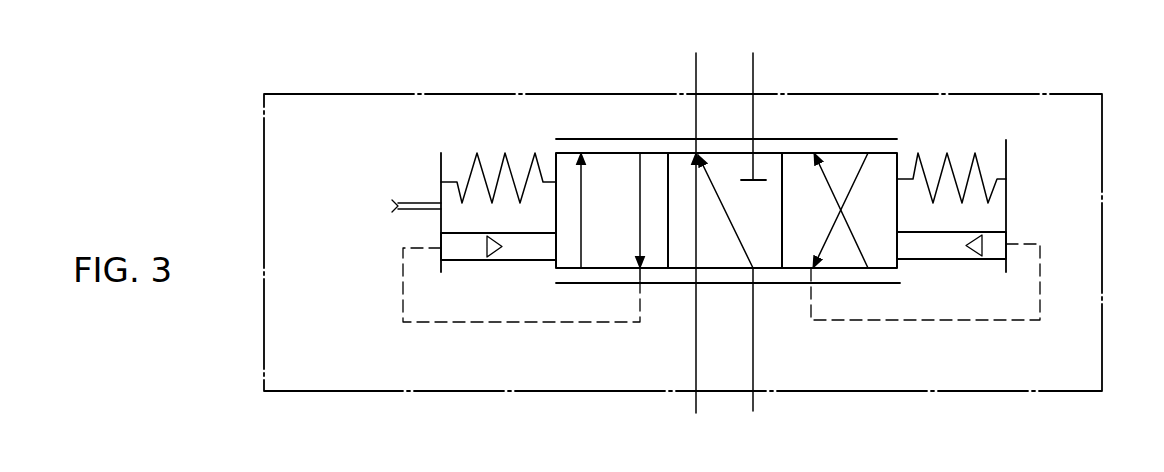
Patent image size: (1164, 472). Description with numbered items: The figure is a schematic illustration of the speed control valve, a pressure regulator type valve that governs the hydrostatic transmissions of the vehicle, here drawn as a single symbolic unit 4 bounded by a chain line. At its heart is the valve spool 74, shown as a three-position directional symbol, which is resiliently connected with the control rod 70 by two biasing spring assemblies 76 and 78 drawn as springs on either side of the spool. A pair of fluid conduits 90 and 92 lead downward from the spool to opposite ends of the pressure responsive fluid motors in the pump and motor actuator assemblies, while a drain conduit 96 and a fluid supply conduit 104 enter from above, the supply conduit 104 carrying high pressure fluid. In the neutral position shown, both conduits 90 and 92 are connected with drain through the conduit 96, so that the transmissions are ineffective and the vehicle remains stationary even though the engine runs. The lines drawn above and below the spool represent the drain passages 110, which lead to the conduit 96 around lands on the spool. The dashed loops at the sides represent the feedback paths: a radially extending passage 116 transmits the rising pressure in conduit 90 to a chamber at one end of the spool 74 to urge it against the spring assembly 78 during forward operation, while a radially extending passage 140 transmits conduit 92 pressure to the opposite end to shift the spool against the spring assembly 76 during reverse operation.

The hydraulic control system 4 is at (1105, 103).
The control rod 70 is at (406, 203).
The valve spool 74 is at (898, 153).
The biasing spring assembly 76 is at (488, 158).
The biasing spring assembly 78 is at (978, 152).
The fluid conduit 90 is at (697, 409).
The fluid conduit 92 is at (754, 406).
The conduit 96 is at (700, 38).
The fluid supply conduit 104 is at (753, 58).
The drain passage 110 is at (696, 114).
The radially extending passage 116 is at (403, 289).
The radially extending passage 140 is at (925, 323).